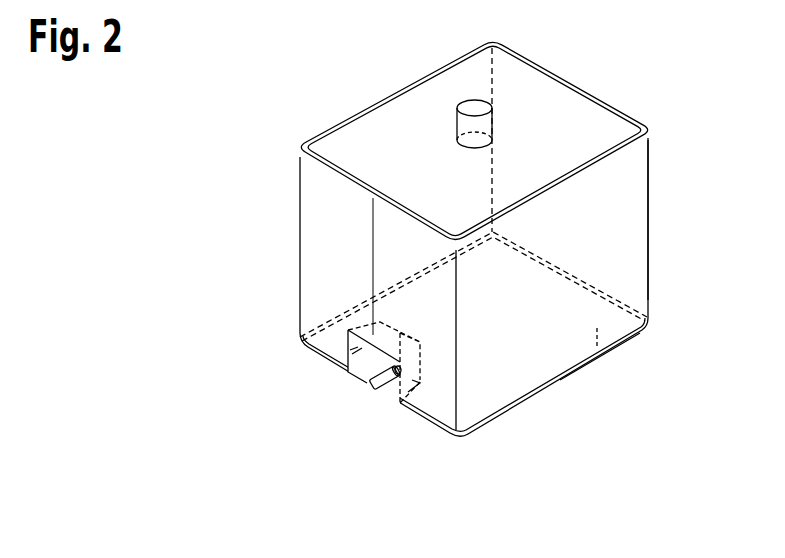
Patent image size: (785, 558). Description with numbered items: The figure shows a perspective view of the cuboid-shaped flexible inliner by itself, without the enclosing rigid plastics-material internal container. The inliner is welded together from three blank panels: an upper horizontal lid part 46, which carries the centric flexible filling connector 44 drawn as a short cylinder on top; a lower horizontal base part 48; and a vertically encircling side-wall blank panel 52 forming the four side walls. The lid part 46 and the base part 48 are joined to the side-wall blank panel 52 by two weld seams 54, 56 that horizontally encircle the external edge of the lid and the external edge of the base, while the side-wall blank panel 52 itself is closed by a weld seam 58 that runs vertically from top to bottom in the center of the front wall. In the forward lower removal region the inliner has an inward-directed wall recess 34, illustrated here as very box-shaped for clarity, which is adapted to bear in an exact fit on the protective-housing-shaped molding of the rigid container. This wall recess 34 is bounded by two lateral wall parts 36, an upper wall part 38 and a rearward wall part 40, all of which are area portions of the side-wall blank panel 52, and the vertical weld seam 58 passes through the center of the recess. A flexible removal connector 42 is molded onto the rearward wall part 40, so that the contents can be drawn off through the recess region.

The wall recess 34 is at (392, 377).
The lateral wall parts 36 is at (343, 373).
The upper wall part 38 is at (363, 327).
The rearward wall part 40 is at (358, 352).
The flexible removal connector 42 is at (393, 390).
The flexible filling connector 44 is at (467, 128).
The upper horizontal lid part 46 is at (577, 140).
The lower horizontal base part 48 is at (597, 348).
The side-wall blank panel 52 is at (607, 232).
The weld seam 54 is at (360, 110).
The weld seam 56 is at (508, 407).
The weld seam 58 is at (373, 252).